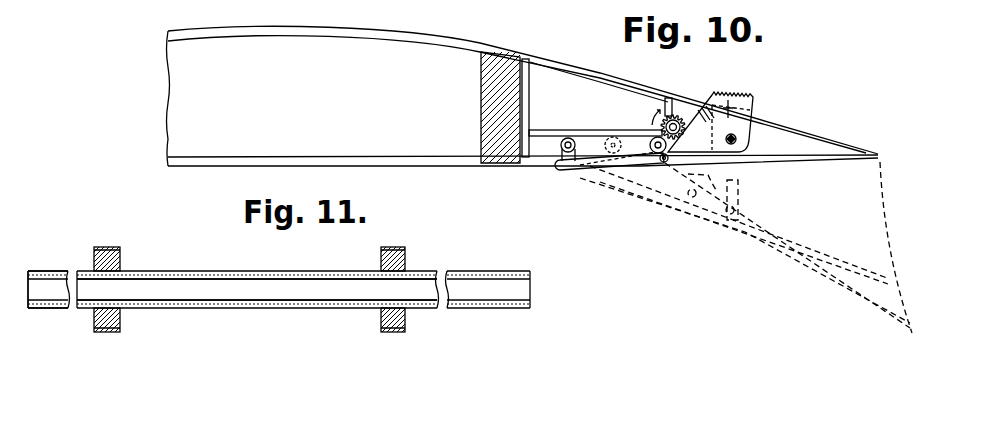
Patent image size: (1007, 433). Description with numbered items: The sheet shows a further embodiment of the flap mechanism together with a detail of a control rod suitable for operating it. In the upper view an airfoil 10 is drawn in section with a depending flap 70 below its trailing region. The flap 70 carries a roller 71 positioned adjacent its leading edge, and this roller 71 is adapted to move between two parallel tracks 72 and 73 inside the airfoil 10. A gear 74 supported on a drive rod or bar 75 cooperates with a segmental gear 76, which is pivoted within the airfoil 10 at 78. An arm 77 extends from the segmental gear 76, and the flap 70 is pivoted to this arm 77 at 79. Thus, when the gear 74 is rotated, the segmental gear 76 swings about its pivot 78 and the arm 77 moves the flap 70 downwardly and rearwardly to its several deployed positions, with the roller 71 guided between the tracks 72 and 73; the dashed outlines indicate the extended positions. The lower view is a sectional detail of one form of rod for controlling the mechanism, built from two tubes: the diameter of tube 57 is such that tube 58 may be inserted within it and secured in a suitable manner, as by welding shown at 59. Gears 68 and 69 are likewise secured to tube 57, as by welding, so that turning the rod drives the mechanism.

In FIG. 10, the airfoil 10 is at (502, 52).
In FIG. 10, the depending flap 70 is at (595, 168).
In FIG. 10, the roller 71 is at (563, 152).
In FIG. 10, the track 72 is at (532, 165).
In FIG. 10, the track 73 is at (556, 131).
In FIG. 10, the gear 74 is at (677, 124).
In FIG. 10, the drive rod 75 is at (683, 114).
In FIG. 10, the segmental gear 76 is at (748, 113).
In FIG. 10, the arm 77 is at (665, 163).
In FIG. 10, the pivot 78 is at (736, 139).
In FIG. 10, the pivot 79 is at (655, 153).
In FIG. 11, the tube 57 is at (163, 271).
In FIG. 11, the tube 58 is at (190, 302).
In FIG. 11, the weld 59 is at (31, 301).
In FIG. 11, the gear 68 is at (108, 331).
In FIG. 11, the gear 69 is at (388, 332).